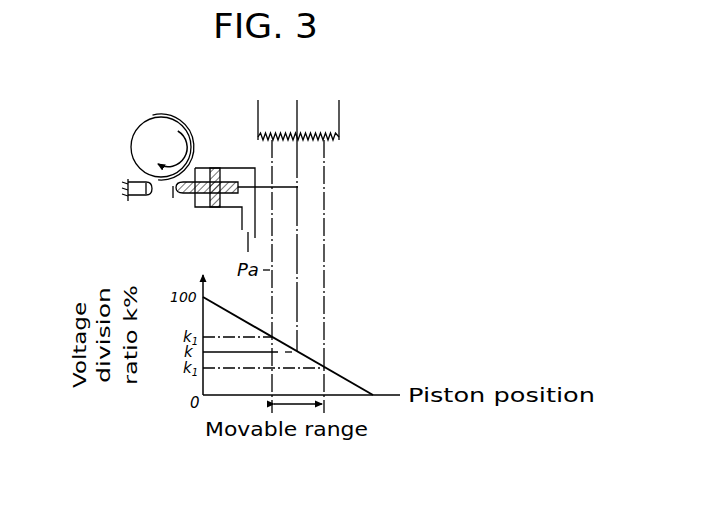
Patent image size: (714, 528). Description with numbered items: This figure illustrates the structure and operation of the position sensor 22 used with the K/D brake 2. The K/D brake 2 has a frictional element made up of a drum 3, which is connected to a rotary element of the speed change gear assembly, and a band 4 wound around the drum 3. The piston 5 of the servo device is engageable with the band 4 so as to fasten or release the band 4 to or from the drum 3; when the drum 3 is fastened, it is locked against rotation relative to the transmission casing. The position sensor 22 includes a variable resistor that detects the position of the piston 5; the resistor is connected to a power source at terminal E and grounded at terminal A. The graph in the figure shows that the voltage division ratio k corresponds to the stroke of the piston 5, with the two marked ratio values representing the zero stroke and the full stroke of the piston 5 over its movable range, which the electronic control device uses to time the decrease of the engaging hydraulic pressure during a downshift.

The K/D brake 2 is at (132, 220).
The drum 3 is at (157, 142).
The band 4 is at (172, 114).
The piston 5 is at (212, 169).
The position sensor 22 is at (351, 110).